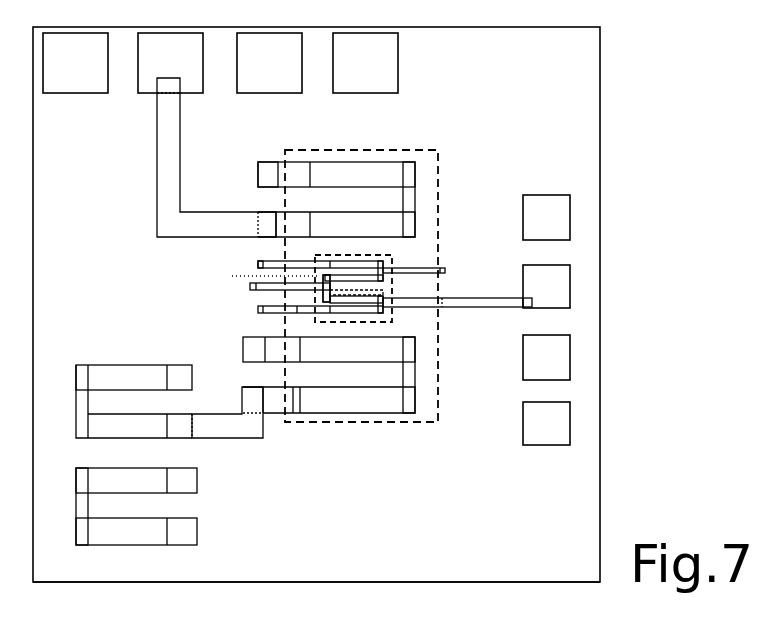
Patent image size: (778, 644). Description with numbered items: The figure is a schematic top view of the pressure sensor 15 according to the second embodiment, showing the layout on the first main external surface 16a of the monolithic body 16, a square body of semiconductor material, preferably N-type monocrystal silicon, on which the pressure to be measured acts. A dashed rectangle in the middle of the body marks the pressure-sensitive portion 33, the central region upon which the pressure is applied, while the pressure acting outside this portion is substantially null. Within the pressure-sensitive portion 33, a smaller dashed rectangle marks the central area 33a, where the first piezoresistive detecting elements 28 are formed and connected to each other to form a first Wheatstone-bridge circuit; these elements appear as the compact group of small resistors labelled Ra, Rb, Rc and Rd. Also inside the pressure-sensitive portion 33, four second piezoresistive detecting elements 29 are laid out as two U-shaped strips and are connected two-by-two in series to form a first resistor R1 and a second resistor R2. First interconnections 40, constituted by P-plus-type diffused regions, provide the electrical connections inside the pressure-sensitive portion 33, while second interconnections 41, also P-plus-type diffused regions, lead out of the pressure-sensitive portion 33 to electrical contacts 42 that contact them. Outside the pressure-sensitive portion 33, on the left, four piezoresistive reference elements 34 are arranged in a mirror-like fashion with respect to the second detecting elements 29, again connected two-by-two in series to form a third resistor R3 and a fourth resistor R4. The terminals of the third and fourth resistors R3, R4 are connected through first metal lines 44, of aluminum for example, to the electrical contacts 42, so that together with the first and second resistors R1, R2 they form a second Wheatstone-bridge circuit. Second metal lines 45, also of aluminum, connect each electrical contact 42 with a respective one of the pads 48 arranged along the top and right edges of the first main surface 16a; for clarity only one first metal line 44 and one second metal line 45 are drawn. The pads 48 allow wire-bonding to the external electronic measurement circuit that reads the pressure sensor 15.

The pressure sensor 15 is at (623, 222).
The monolithic body 16 is at (595, 402).
The first main external surface 16a is at (522, 550).
The pads 48 is at (388, 79).
The second metal lines 45 is at (165, 160).
The first metal lines 44 is at (237, 428).
The electrical contacts 42 is at (260, 172).
The second piezoresistive detecting elements 29 is at (362, 171).
The pressure-sensitive portion 33 is at (410, 424).
The central area 33a is at (232, 276).
The first piezoresistive detecting elements 28 is at (340, 318).
The piezoresistive reference elements 34 is at (100, 445).
The first interconnections 40 is at (410, 202).
The second interconnections 41 is at (297, 307).
The first resistor R1 is at (333, 157).
The second resistor R2 is at (375, 421).
The third resistor R3 is at (136, 527).
The fourth resistor R4 is at (133, 359).
The resistor Ra is at (364, 262).
The resistor Rb is at (364, 280).
The resistor Rc is at (364, 298).
The resistor Rd is at (376, 312).